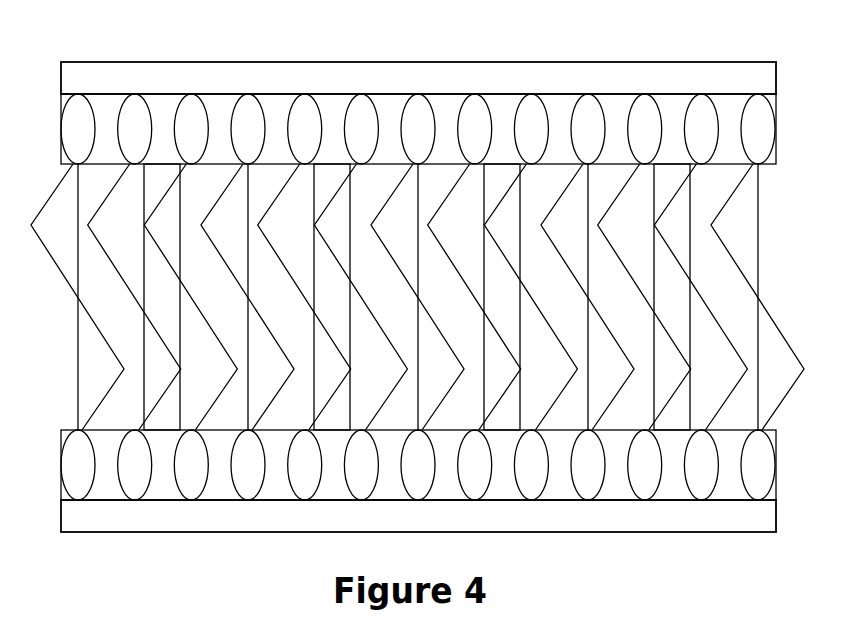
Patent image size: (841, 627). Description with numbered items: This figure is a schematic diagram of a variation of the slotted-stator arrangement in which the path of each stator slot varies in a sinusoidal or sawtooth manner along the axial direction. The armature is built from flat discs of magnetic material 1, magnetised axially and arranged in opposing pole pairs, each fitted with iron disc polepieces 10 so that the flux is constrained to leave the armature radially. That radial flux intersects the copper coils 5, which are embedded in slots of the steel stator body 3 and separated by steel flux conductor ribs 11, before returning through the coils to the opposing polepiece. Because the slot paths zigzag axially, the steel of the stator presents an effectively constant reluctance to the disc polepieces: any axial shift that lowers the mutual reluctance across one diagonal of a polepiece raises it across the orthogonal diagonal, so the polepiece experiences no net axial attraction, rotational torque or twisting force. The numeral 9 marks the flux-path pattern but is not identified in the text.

The magnetic material discs 1 is at (163, 112).
The steel stator body 3 is at (228, 83).
The copper coils 5 is at (308, 115).
The flux path 9 is at (62, 288).
The iron disc polepieces 10 is at (448, 183).
The steel flux conductor ribs 11 is at (672, 120).